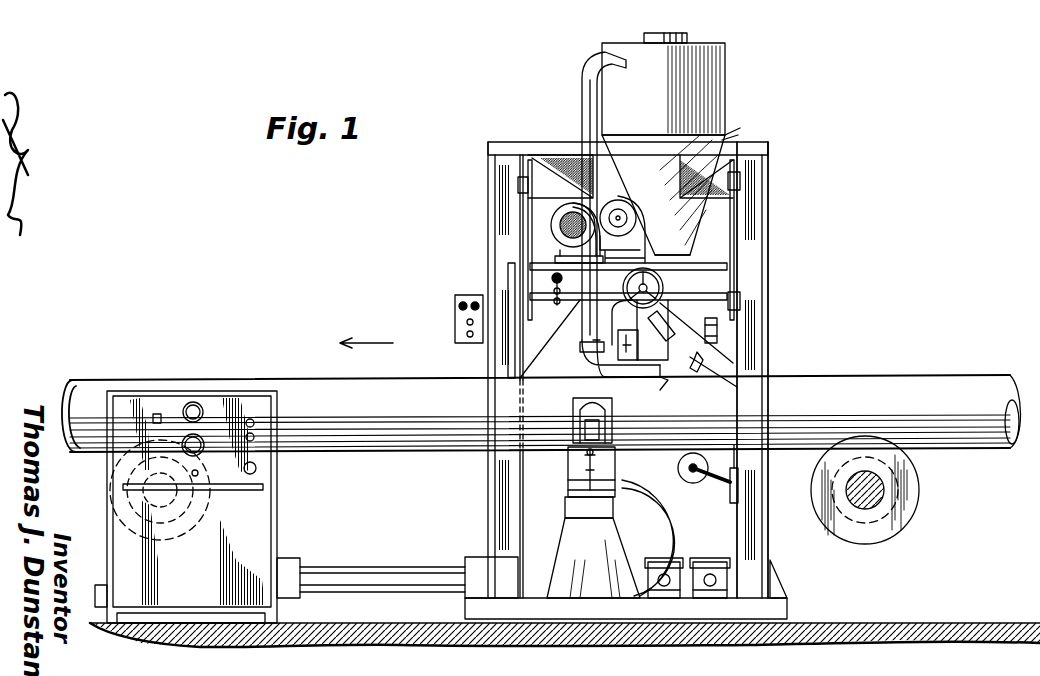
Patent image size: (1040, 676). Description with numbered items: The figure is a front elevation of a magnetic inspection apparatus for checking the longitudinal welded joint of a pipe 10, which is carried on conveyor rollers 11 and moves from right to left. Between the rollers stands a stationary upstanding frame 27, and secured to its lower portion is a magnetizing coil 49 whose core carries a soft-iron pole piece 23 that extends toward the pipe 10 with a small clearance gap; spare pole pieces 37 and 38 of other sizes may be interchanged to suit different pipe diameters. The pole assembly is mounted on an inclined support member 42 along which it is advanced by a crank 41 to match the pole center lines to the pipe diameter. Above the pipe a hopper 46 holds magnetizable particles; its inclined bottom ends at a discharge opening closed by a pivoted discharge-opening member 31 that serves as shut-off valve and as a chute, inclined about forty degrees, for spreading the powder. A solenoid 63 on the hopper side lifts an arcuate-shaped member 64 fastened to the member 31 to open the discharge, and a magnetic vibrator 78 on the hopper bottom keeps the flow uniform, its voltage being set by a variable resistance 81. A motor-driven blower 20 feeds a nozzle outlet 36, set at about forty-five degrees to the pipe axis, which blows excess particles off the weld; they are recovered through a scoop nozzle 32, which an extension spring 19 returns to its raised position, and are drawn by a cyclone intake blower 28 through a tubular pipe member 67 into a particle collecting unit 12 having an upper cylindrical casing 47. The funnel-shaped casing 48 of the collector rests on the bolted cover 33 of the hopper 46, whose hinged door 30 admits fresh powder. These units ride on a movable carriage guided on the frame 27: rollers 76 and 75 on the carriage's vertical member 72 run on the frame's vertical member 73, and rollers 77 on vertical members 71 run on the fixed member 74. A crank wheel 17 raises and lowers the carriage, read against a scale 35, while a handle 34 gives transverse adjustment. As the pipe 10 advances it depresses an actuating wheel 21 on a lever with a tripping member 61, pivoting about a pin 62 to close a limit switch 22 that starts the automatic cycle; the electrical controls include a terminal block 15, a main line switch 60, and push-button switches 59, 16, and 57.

The pipe 10 is at (877, 380).
The conveyor roller 11 is at (919, 480).
The particle collecting unit 12 is at (727, 133).
The terminal block 15 is at (100, 585).
The normally closed push-button switch 16 is at (455, 318).
The crank wheel 17 is at (666, 288).
The extension spring 19 is at (616, 304).
The blower 20 is at (566, 240).
The actuating wheel 21 is at (688, 474).
The limit switch 22 is at (731, 505).
The pole piece 23 is at (612, 408).
The upstanding frame 27 is at (755, 297).
The cyclone blower 28 is at (622, 204).
The door 30 is at (706, 262).
The discharge-opening member 31 is at (697, 372).
The scoop nozzle 32 is at (661, 380).
The bolted cover 33 is at (678, 252).
The handle 34 is at (562, 288).
The scale 35 is at (500, 345).
The nozzle outlet 36 is at (582, 352).
The spare pole piece 37 is at (666, 560).
The spare pole piece 38 is at (712, 562).
The crank 41 is at (590, 460).
The inclined support member 42 is at (560, 533).
The hopper 46 is at (700, 318).
The hopper 47 is at (730, 70).
The funnel-shaped casing 48 is at (730, 142).
The magnetizing coil 49 is at (608, 462).
The normally closed push-button switch 57 is at (262, 425).
The push-button switch 59 is at (198, 475).
The main line switch 60 is at (157, 414).
The tripping member 61 is at (708, 465).
The pin 62 is at (712, 478).
The solenoid 63 is at (674, 328).
The arcuate-shaped member 64 is at (717, 350).
The tubular pipe member 67 is at (581, 103).
The vertical member 71 is at (728, 215).
The vertical member 72 is at (527, 240).
The vertical member 73 is at (490, 229).
The fixed member 74 is at (760, 190).
The rollers 75 is at (516, 318).
The rollers 76 is at (517, 182).
The rollers 77 is at (740, 178).
The magnetic vibrator 78 is at (690, 315).
The variable resistance 81 is at (257, 468).